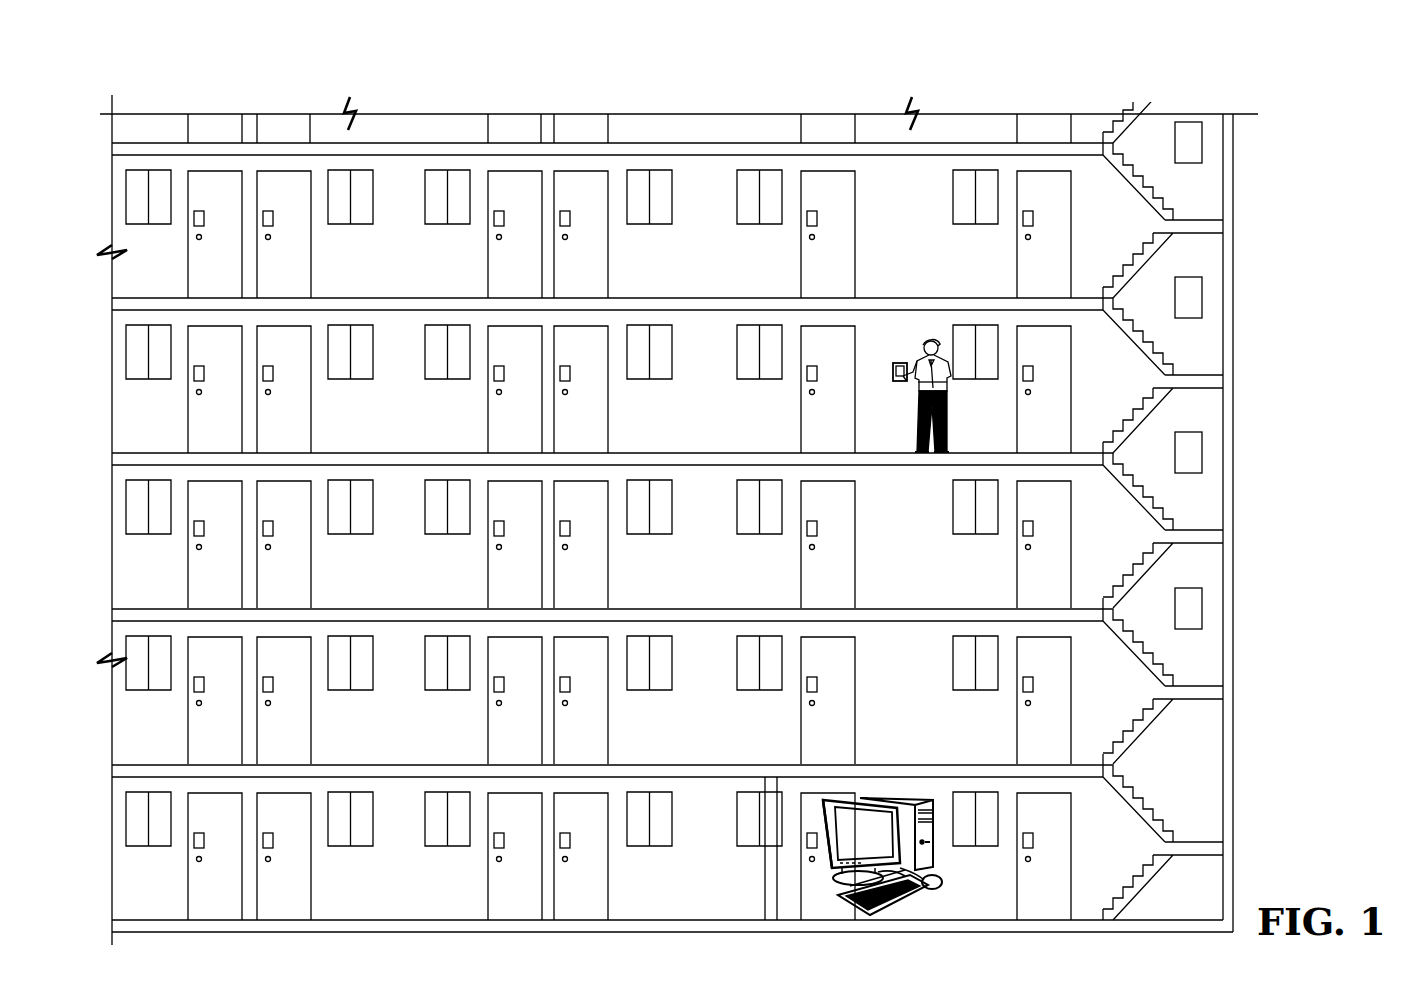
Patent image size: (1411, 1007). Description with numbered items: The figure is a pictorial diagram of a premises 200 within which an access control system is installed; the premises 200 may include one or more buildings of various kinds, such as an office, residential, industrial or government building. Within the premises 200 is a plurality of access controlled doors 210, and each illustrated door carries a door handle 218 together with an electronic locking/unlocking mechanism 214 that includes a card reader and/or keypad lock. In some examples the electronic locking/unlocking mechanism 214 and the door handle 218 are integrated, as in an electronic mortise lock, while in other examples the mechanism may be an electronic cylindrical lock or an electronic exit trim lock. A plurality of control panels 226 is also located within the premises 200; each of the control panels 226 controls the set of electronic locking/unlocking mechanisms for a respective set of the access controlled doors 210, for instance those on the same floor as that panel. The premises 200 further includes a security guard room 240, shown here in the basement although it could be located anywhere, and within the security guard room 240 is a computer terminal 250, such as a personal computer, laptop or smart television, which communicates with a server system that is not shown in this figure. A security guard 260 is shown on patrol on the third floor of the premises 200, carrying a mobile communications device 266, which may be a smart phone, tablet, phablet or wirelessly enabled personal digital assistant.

The premises 200 is at (1304, 96).
The access controlled doors 210 is at (516, 192).
The electronic locking/unlocking mechanism 214 is at (803, 222).
The door handle 218 is at (810, 241).
The control panels 226 is at (1192, 138).
The security guard room 240 is at (1046, 880).
The computer terminal 250 is at (935, 817).
The security guard 260 is at (929, 338).
The mobile communications device 266 is at (893, 368).